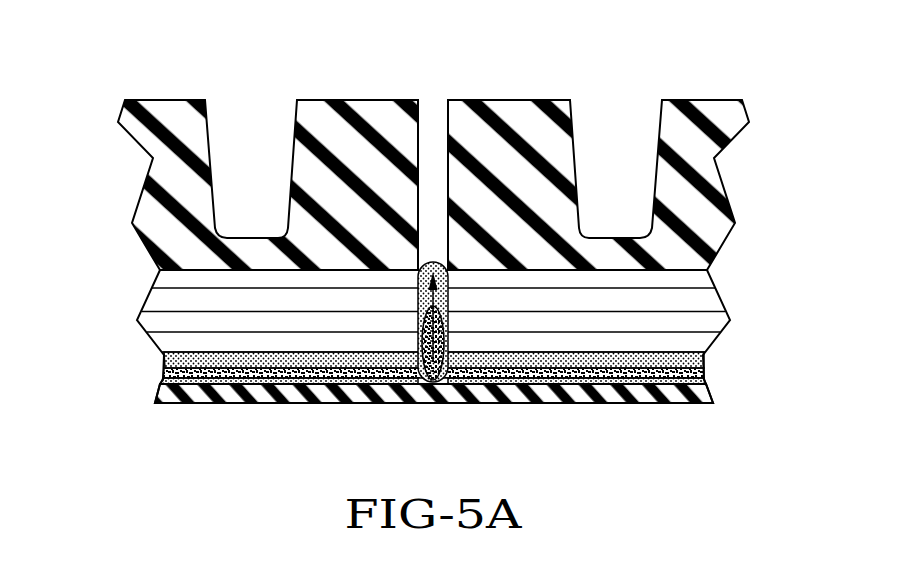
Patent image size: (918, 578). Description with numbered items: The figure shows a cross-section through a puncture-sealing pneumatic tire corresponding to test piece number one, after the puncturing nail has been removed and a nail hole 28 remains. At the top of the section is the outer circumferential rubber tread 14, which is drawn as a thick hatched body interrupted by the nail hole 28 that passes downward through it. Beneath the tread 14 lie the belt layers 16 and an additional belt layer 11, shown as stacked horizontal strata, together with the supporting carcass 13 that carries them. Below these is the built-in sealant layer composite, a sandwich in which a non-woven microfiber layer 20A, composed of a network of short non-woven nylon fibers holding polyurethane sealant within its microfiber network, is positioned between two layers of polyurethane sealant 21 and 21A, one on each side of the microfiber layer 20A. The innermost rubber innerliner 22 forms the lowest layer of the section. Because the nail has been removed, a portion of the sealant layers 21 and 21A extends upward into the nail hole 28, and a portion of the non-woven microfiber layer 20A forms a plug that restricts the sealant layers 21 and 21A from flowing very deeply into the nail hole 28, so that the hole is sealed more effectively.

The additional belt layer 11 is at (687, 280).
The supporting carcass 13 is at (687, 341).
The outer circumferential rubber tread 14 is at (358, 107).
The belt layers 16 is at (173, 325).
The non-woven microfiber layer 20A is at (235, 373).
The polyurethane sealant layer 21 is at (337, 358).
The polyurethane sealant layer 21A is at (502, 382).
The innermost rubber innerliner 22 is at (612, 403).
The nail hole 28 is at (448, 118).